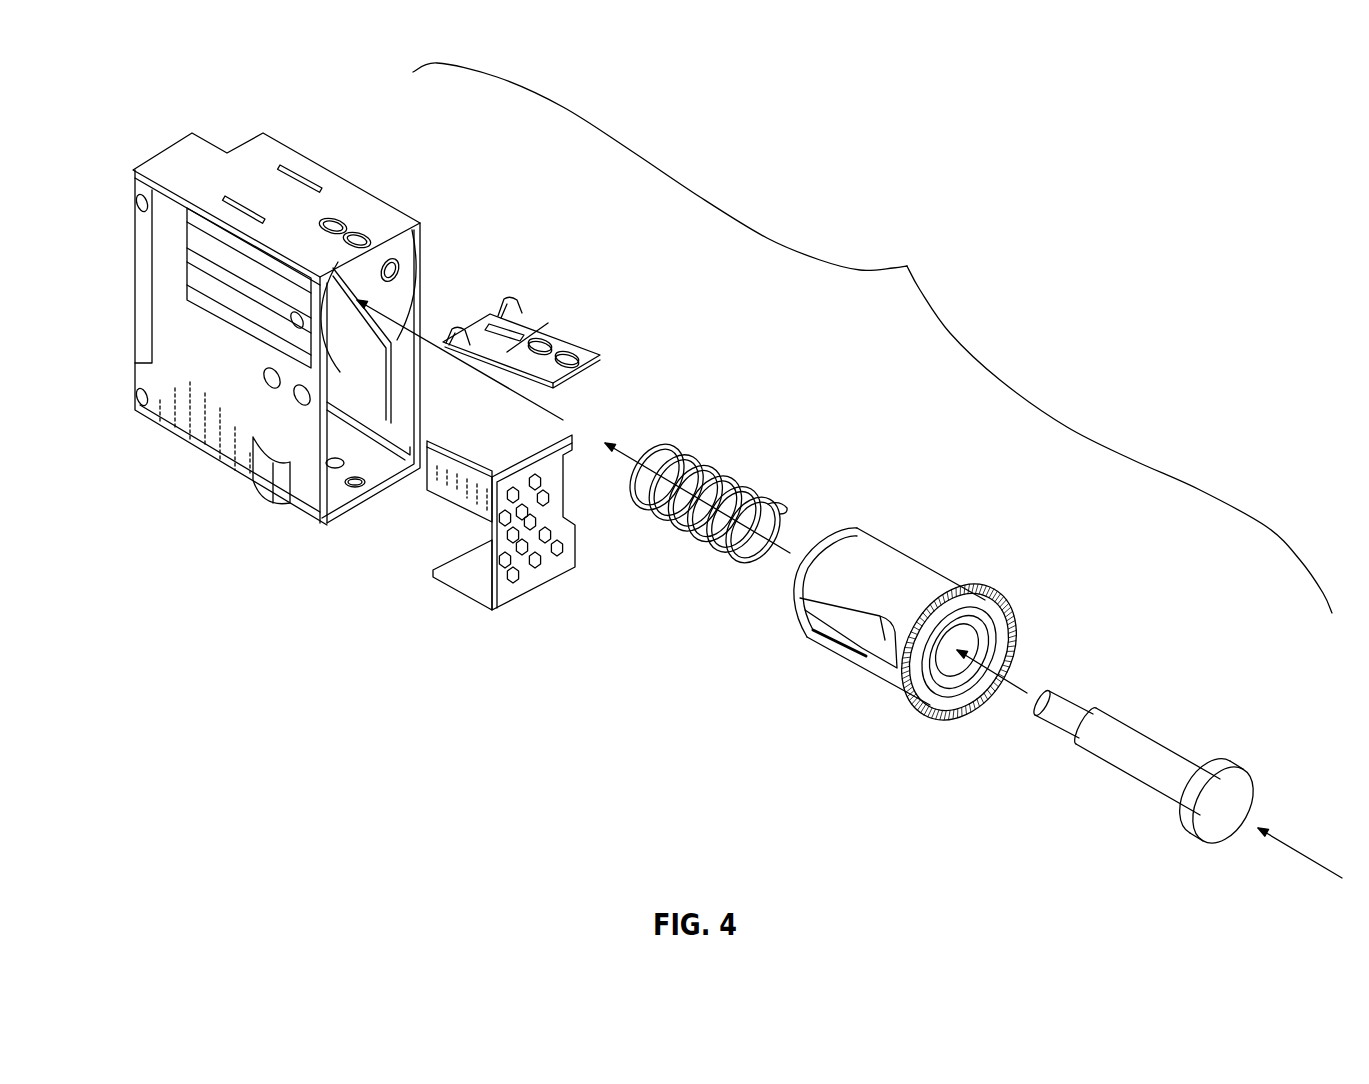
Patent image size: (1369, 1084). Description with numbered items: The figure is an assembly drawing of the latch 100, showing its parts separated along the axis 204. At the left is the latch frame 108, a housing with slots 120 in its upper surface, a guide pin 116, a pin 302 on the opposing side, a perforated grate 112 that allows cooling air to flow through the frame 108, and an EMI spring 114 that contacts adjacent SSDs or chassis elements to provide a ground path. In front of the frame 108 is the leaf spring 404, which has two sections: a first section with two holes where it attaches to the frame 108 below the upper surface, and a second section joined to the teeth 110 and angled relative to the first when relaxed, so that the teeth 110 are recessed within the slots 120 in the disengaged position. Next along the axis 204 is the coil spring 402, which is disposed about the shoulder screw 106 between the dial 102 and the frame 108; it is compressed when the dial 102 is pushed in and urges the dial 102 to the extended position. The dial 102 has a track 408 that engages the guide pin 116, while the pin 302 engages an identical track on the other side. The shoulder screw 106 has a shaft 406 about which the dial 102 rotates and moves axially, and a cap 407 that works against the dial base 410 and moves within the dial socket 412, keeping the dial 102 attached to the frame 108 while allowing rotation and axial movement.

The latch 100 is at (907, 266).
The dial 102 is at (919, 612).
The shoulder screw 106 is at (1111, 787).
The latch frame 108 is at (361, 173).
The teeth 110 is at (516, 297).
The grate 112 is at (505, 594).
The EMI spring 114 is at (262, 483).
The guide pin 116 is at (297, 322).
The slots 120 is at (303, 182).
The axis 204 is at (485, 375).
The pin 302 is at (411, 224).
The coil spring 402 is at (738, 447).
The leaf spring 404 is at (581, 337).
The shaft 406 is at (1120, 752).
The cap 407 is at (1220, 825).
The track 408 is at (873, 650).
The dial base 410 is at (830, 540).
The dial socket 412 is at (956, 671).